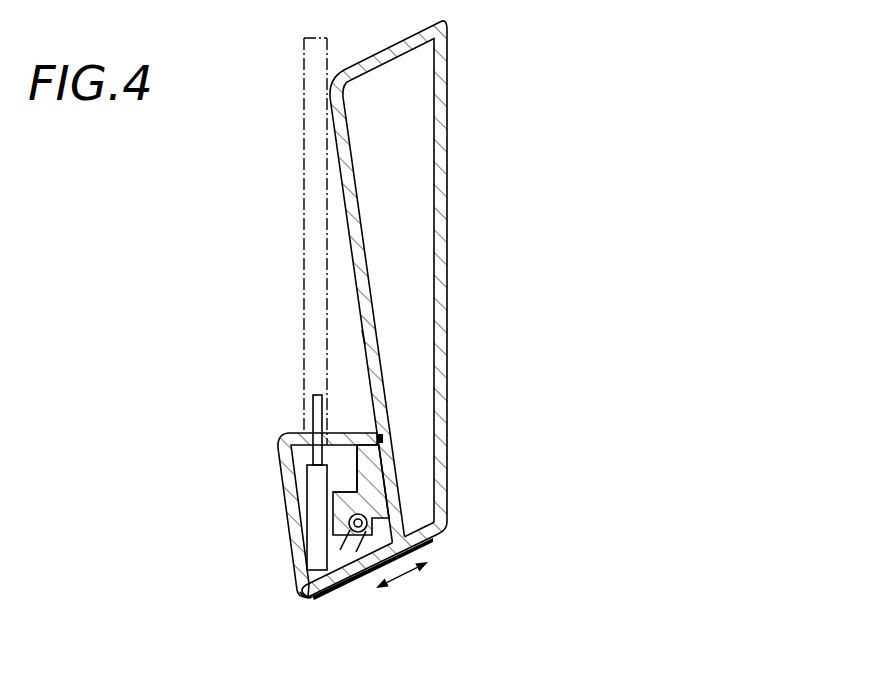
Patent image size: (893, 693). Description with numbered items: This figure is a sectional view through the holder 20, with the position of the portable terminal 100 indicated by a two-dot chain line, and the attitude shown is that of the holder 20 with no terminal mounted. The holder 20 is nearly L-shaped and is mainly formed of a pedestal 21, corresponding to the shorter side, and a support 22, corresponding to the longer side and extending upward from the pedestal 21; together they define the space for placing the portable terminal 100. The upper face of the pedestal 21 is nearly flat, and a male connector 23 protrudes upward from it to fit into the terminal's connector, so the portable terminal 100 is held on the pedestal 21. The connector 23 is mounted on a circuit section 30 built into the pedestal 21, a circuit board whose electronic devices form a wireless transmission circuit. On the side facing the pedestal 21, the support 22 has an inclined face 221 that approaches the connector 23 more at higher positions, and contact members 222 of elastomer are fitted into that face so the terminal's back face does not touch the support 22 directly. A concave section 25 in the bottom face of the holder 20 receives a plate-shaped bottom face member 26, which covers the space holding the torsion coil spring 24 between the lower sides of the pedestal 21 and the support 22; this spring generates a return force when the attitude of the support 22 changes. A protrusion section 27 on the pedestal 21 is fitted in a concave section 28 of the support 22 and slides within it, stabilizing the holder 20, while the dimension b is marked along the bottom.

The holder 20 is at (475, 118).
The pedestal 21 is at (271, 504).
The support 22 is at (460, 277).
The inclined face 221 is at (362, 337).
The contact members 222 is at (330, 123).
The connector 23 is at (316, 409).
The torsion coil spring 24 is at (357, 548).
The concave section 25 is at (428, 540).
The bottom face member 26 is at (318, 594).
The protrusion section 27 is at (374, 440).
The concave section 28 is at (360, 468).
The circuit section 30 is at (316, 540).
The portable terminal 100 is at (316, 168).
The gap distance b is at (402, 584).